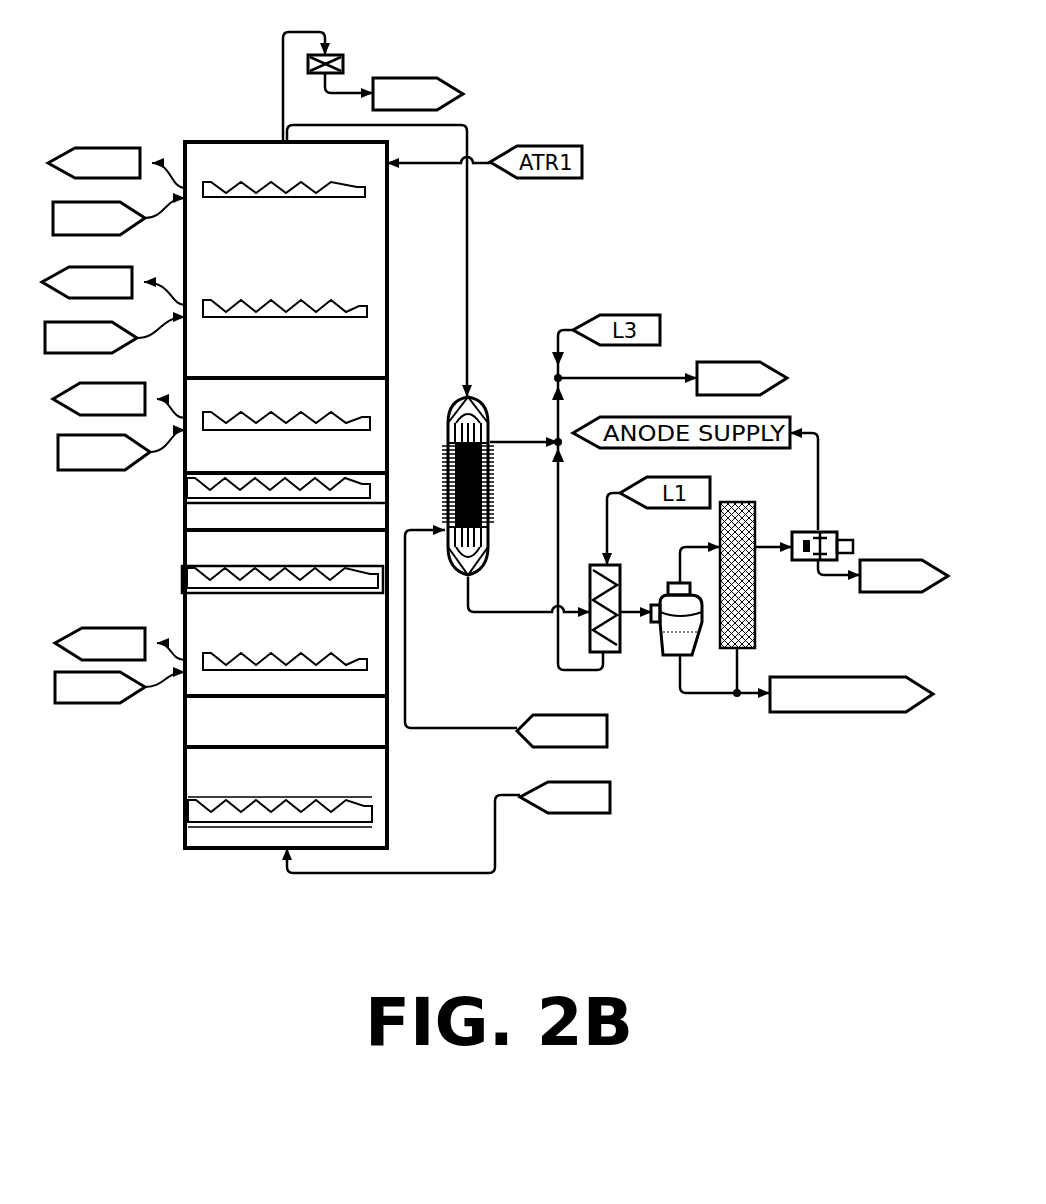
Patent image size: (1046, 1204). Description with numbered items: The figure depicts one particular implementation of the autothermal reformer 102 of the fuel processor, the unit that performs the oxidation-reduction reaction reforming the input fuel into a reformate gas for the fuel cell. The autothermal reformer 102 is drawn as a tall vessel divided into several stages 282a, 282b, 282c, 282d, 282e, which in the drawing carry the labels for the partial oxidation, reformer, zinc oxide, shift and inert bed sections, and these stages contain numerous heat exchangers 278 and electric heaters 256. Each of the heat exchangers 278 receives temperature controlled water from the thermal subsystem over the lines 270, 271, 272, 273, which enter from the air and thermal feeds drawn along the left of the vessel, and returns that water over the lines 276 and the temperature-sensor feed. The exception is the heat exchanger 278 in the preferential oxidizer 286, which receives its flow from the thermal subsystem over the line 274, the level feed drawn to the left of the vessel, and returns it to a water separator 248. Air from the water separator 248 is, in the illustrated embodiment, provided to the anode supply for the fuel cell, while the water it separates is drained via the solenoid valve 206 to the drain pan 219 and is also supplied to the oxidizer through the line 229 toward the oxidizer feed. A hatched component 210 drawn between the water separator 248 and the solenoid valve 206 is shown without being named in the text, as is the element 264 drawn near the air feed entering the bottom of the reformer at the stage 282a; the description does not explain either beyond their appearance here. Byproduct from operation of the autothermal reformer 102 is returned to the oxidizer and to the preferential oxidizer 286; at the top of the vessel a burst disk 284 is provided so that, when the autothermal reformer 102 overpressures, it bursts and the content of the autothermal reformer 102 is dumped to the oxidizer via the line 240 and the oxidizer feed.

The autothermal reformer 102 is at (172, 40).
The burst disk 284 is at (328, 55).
The line 240 is at (347, 93).
The lines 276 is at (165, 160).
The line 270 is at (160, 218).
The heat exchangers 278 is at (322, 197).
The line 271 is at (168, 333).
The line 272 is at (153, 453).
The stage 282e is at (388, 255).
The stage 282d is at (390, 447).
The stage 282c is at (390, 615).
The stage 282b is at (388, 720).
The stage 282a is at (390, 800).
The preferential oxidizer 286 is at (472, 410).
The electric heaters 256 is at (307, 505).
The line 274 is at (173, 662).
The water separator 248 is at (660, 593).
The solenoid valve 206 is at (837, 532).
The line 229 is at (820, 577).
The filter 210 is at (757, 598).
The drain pan 219 is at (860, 717).
The line 273 is at (533, 742).
The ATR2 line 264 is at (612, 793).